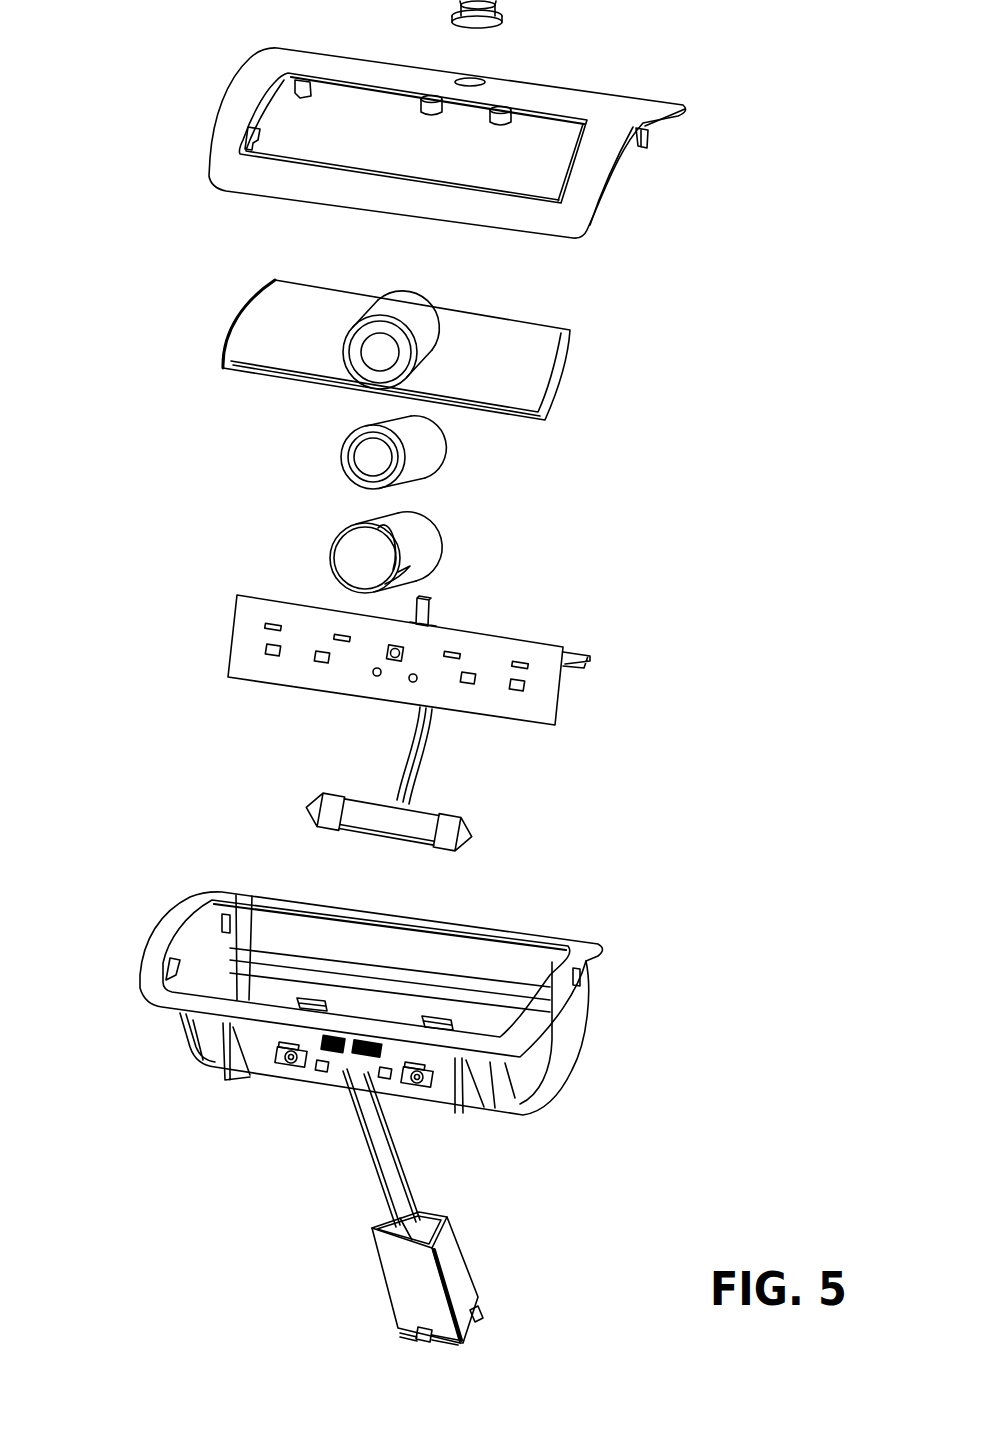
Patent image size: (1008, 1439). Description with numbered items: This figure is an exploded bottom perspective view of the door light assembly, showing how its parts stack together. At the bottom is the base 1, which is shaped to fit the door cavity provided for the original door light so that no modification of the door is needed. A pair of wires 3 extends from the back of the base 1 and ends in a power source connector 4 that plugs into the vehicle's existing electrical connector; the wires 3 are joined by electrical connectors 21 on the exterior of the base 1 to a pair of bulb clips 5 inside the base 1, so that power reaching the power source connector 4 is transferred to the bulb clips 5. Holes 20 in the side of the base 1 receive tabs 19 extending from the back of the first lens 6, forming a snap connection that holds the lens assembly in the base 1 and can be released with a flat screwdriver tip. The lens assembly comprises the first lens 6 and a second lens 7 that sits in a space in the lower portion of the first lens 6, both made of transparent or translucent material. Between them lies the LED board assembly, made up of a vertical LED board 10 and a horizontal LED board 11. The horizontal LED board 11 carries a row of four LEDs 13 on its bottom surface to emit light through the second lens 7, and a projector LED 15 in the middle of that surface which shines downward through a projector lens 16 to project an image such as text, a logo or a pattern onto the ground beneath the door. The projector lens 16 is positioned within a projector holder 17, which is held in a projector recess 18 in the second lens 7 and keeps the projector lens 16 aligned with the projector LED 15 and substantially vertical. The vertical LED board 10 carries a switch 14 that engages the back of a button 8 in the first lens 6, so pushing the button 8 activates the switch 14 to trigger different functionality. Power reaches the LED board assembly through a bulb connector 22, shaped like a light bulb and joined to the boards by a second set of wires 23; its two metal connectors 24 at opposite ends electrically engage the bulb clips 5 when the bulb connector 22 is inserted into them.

The base 1 is at (140, 978).
The pair of wires 3 is at (385, 1152).
The power source connector 4 is at (400, 1283).
The bulb clips 5 is at (310, 997).
The first lens 6 is at (210, 157).
The second lens 7 is at (248, 327).
The button 8 is at (500, 25).
The vertical LED board 10 is at (588, 657).
The horizontal LED board 11 is at (237, 637).
The LEDs 13 is at (320, 664).
The switch 14 is at (435, 610).
The projector LED 15 is at (394, 662).
The projector lens 16 is at (345, 460).
The projector holder 17 is at (333, 563).
The projector recess 18 is at (357, 330).
The tabs 19 is at (303, 95).
The holes 20 is at (222, 920).
The electrical connectors 21 is at (288, 1062).
The bulb connector 22 is at (386, 830).
The second set of wires 23 is at (410, 785).
The metal connectors 24 is at (318, 821).